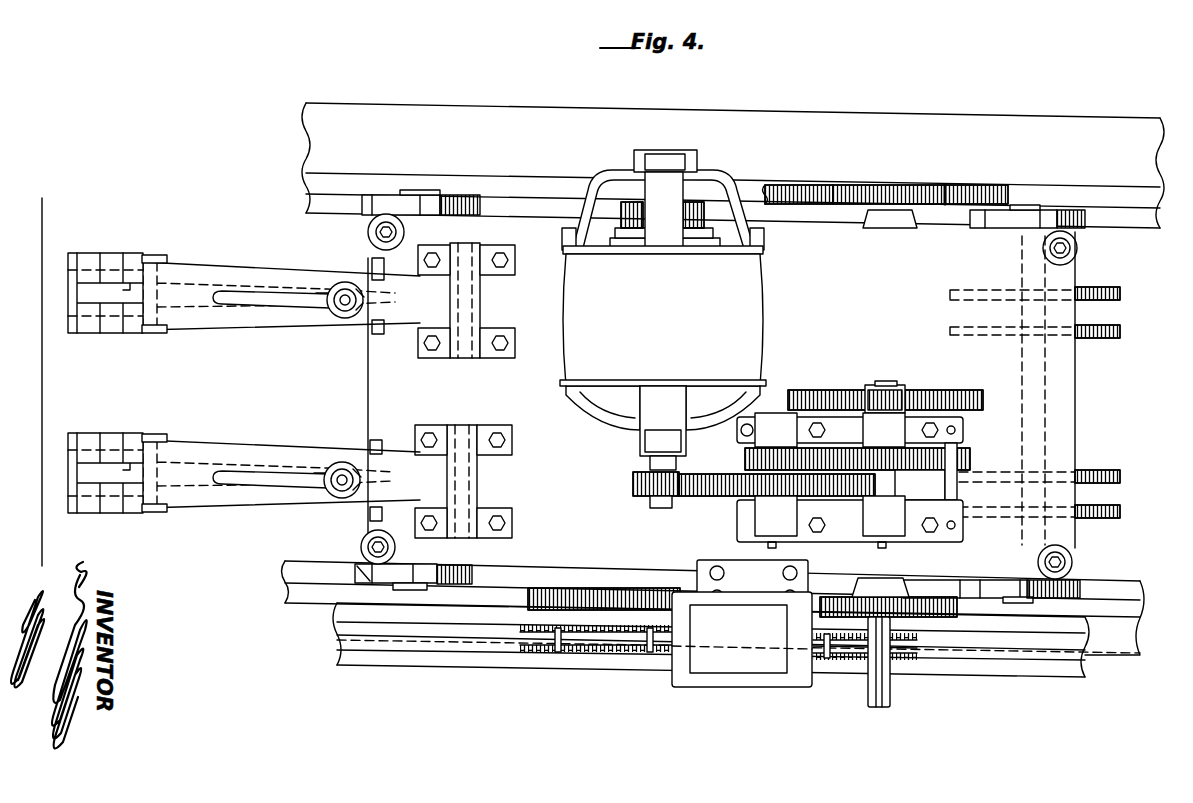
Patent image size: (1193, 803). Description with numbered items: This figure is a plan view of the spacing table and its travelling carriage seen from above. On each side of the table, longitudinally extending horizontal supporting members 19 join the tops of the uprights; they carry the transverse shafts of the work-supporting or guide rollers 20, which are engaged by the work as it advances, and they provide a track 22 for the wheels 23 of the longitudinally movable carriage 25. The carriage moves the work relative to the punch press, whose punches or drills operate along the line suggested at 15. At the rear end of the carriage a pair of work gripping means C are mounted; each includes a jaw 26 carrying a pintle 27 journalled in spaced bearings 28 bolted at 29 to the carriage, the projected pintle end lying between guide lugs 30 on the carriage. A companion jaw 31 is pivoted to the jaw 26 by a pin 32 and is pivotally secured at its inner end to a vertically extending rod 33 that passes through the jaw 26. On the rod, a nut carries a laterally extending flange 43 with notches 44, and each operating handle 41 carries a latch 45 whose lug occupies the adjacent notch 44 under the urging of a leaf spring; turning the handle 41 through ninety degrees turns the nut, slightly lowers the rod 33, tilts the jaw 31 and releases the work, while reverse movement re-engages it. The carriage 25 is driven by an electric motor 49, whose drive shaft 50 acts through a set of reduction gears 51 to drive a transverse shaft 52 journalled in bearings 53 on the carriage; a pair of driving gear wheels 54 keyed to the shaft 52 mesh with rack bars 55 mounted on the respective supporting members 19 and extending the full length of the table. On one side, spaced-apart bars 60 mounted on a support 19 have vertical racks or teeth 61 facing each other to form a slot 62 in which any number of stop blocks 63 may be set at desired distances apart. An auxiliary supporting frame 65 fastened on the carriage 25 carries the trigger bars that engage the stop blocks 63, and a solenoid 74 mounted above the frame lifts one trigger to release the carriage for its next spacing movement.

The line of punch or drill operation 15 is at (42, 380).
The supporting members 19 is at (852, 142).
The work-supporting or guide rollers 20 is at (1112, 330).
The track 22 is at (518, 205).
The wheels 23 is at (443, 195).
The carriage 25 is at (955, 390).
The jaw 26 is at (105, 331).
The pintle 27 is at (463, 358).
The bearings 28 is at (494, 276).
The bolts 29 is at (502, 344).
The guide lugs 30 is at (370, 328).
The companion jaw 31 is at (86, 258).
The pin 32 is at (150, 256).
The rod 33 is at (345, 288).
The operating handle 41 is at (236, 292).
The flange 43 is at (365, 295).
The notches 44 is at (362, 306).
The latch 45 is at (321, 292).
The electric motor 49 is at (663, 303).
The drive shaft 50 is at (640, 458).
The reduction gears 51 is at (831, 453).
The transverse shaft 52 is at (882, 692).
The bearings 53 is at (892, 218).
The driving gear wheels 54 is at (893, 190).
The rack bars 55 is at (797, 185).
The spaced-apart bars 60 is at (592, 623).
The vertical racks or teeth 61 is at (577, 650).
The slot 62 is at (627, 645).
The stop blocks 63 is at (557, 634).
The auxiliary supporting frame 65 is at (752, 581).
The solenoid 74 is at (742, 639).
The work gripping means C is at (205, 312).